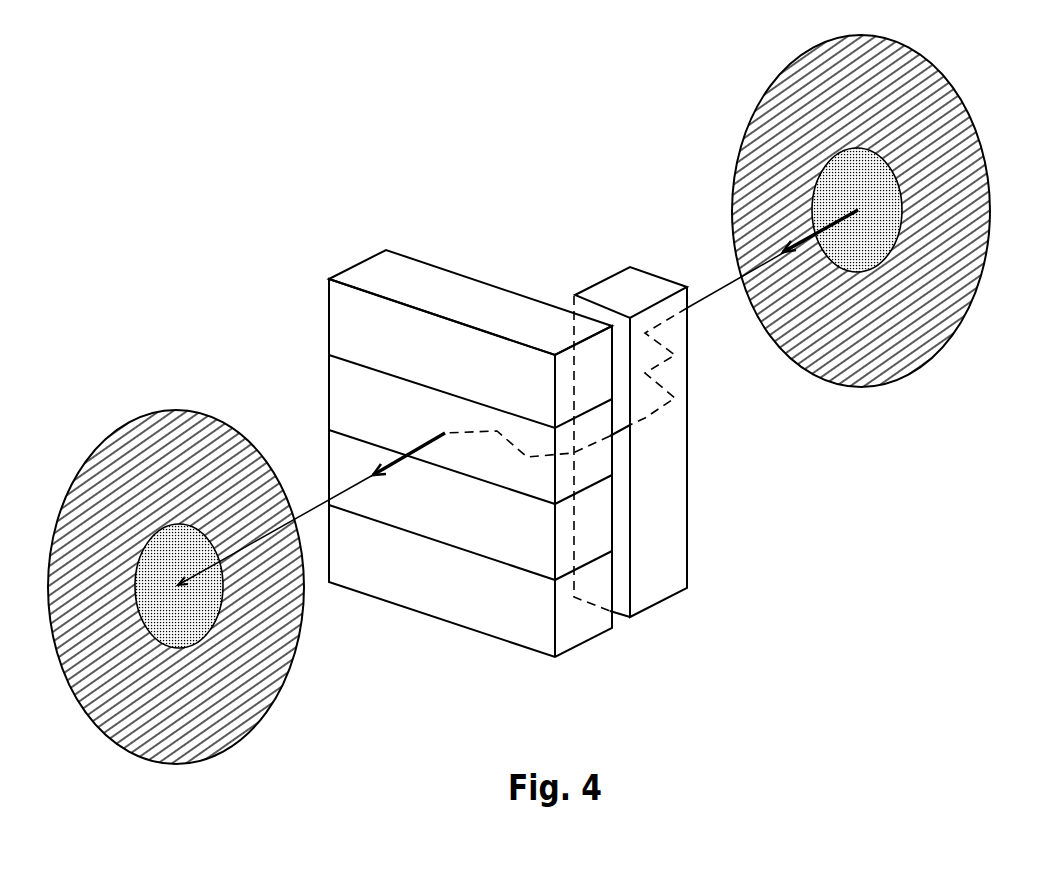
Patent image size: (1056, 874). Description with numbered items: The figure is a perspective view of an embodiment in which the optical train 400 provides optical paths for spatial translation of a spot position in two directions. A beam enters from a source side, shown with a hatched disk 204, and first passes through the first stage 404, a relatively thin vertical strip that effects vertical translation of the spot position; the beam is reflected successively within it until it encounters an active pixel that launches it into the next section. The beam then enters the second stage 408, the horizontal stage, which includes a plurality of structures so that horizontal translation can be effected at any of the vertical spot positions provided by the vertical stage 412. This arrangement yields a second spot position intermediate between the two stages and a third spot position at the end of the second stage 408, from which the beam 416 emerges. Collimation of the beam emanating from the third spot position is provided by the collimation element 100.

The collimation element 100 is at (265, 712).
The light source disk 204 is at (983, 272).
The optical train 400 is at (512, 241).
The first stage 404 is at (687, 540).
The second stage 408 is at (388, 249).
The vertical stage 412 is at (717, 288).
The output light ray 416 is at (310, 510).